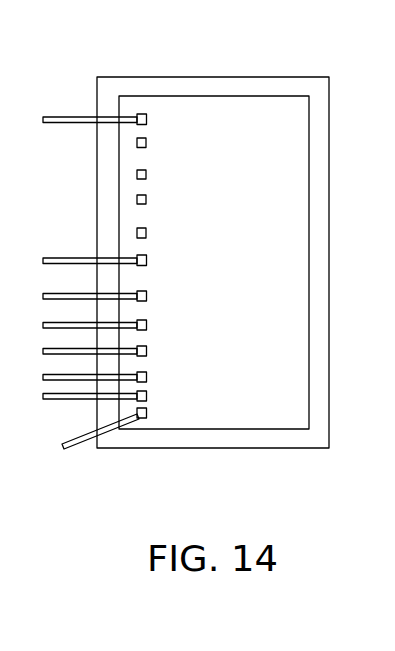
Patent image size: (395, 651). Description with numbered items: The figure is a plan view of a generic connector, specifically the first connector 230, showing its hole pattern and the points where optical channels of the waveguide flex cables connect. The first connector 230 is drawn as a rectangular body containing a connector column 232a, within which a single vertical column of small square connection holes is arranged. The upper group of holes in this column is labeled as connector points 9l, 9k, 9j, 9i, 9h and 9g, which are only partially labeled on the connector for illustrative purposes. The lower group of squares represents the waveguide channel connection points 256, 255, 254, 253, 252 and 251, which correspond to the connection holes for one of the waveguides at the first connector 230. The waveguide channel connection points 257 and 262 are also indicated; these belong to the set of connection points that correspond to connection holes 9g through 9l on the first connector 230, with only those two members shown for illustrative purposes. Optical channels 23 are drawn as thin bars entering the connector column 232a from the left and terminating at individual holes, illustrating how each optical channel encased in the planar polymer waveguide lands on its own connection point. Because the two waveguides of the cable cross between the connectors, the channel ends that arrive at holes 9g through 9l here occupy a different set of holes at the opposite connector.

The optical channels 23 is at (57, 117).
The first connector 230 is at (214, 77).
The connector column 232a is at (142, 96).
The waveguide channel connection point 262 is at (135, 125).
The waveguide channel connection point 257 is at (131, 257).
The connector point 9l is at (147, 118).
The connector point 9k is at (146, 142).
The connector point 9j is at (146, 174).
The connector point 9i is at (146, 199).
The connector point 9h is at (146, 233).
The connector point 9g is at (147, 260).
The waveguide channel connection point 256 is at (150, 292).
The waveguide channel connection point 255 is at (150, 321).
The waveguide channel connection point 254 is at (150, 347).
The waveguide channel connection point 253 is at (150, 373).
The waveguide channel connection point 252 is at (150, 394).
The waveguide channel connection point 251 is at (134, 426).